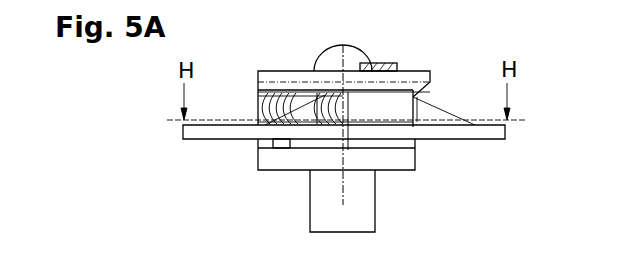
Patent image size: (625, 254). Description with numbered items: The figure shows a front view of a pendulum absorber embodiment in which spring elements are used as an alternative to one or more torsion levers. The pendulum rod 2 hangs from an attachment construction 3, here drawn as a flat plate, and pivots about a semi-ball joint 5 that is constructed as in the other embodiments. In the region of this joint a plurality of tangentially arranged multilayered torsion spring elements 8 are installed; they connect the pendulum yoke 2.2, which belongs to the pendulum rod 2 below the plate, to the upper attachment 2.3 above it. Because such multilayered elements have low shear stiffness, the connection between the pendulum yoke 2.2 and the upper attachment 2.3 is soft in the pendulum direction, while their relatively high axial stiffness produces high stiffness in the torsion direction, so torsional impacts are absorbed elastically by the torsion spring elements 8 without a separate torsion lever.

The pendulum rod 2 is at (367, 213).
The pendulum yoke 2.2 is at (288, 157).
The upper attachment 2.3 is at (443, 127).
The attachment construction 3 is at (188, 140).
The semi-ball joint 5 is at (353, 62).
The multilayered torsion spring elements 8 is at (318, 96).